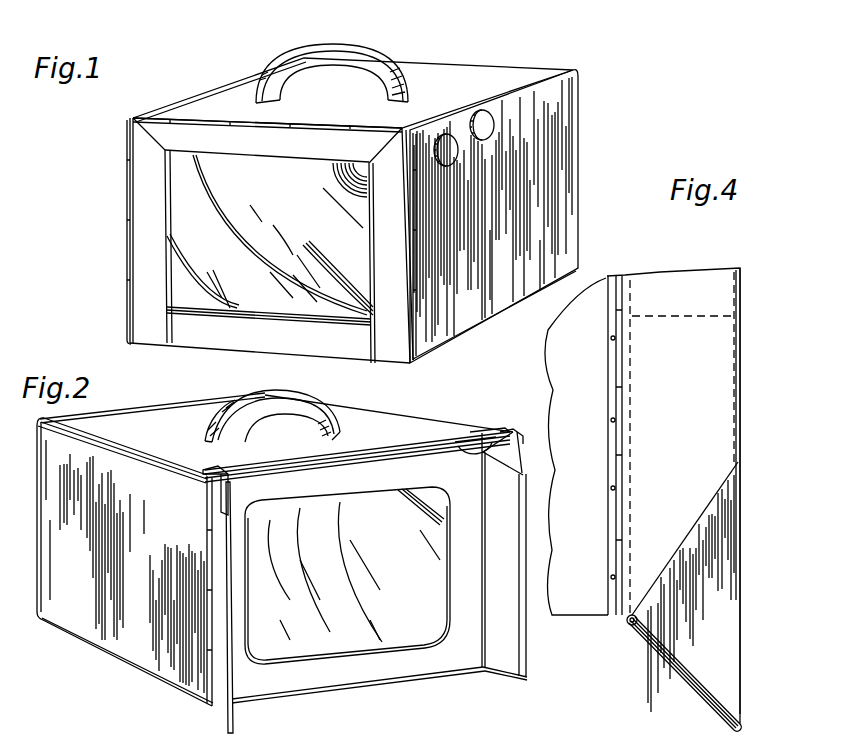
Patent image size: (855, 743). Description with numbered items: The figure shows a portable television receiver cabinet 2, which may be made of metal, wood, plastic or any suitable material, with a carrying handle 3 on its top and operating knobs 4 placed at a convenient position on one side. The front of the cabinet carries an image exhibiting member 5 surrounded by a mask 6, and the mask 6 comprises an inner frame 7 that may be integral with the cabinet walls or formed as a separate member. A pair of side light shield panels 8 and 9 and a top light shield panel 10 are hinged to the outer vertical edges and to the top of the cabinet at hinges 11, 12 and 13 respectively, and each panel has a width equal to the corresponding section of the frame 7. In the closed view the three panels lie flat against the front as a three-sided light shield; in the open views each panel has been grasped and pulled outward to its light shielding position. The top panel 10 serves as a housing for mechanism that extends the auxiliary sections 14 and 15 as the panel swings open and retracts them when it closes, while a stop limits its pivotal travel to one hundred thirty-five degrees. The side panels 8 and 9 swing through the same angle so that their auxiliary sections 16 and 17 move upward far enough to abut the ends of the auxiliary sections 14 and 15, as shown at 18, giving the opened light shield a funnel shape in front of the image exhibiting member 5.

In FIG. 1, the television receiver cabinet 2 is at (579, 150).
In FIG. 4, the television receiver cabinet 2 is at (563, 358).
In FIG. 1, the carrying handle 3 is at (386, 62).
In FIG. 2, the carrying handle 3 is at (303, 409).
In FIG. 1, the operating knobs 4 is at (486, 133).
In FIG. 1, the image exhibiting member 5 is at (200, 218).
In FIG. 2, the image exhibiting member 5 is at (425, 632).
In FIG. 1, the mask 6 is at (388, 260).
In FIG. 2, the mask 6 is at (404, 468).
In FIG. 1, the inner frame 7 is at (213, 328).
In FIG. 2, the inner frame 7 is at (241, 600).
In FIG. 1, the side light shield panel 8 is at (150, 262).
In FIG. 2, the side light shield panel 8 is at (222, 704).
In FIG. 1, the side light shield panel 9 is at (386, 292).
In FIG. 2, the side light shield panel 9 is at (516, 656).
In FIG. 1, the top light shield panel 10 is at (177, 132).
In FIG. 2, the top light shield panel 10 is at (382, 455).
In FIG. 4, the top light shield panel 10 is at (741, 372).
In FIG. 1, the hinge 11 is at (127, 205).
In FIG. 2, the hinge 11 is at (206, 588).
In FIG. 4, the hinge 11 is at (630, 627).
In FIG. 1, the hinge 12 is at (408, 235).
In FIG. 1, the hinge 13 is at (216, 118).
In FIG. 2, the auxiliary section 14 is at (198, 470).
In FIG. 4, the auxiliary section 14 is at (720, 611).
In FIG. 2, the auxiliary section 15 is at (490, 440).
In FIG. 2, the auxiliary section 16 is at (217, 492).
In FIG. 4, the auxiliary section 16 is at (680, 683).
In FIG. 2, the auxiliary section 17 is at (521, 438).
In FIG. 2, the abutment 18 is at (463, 444).